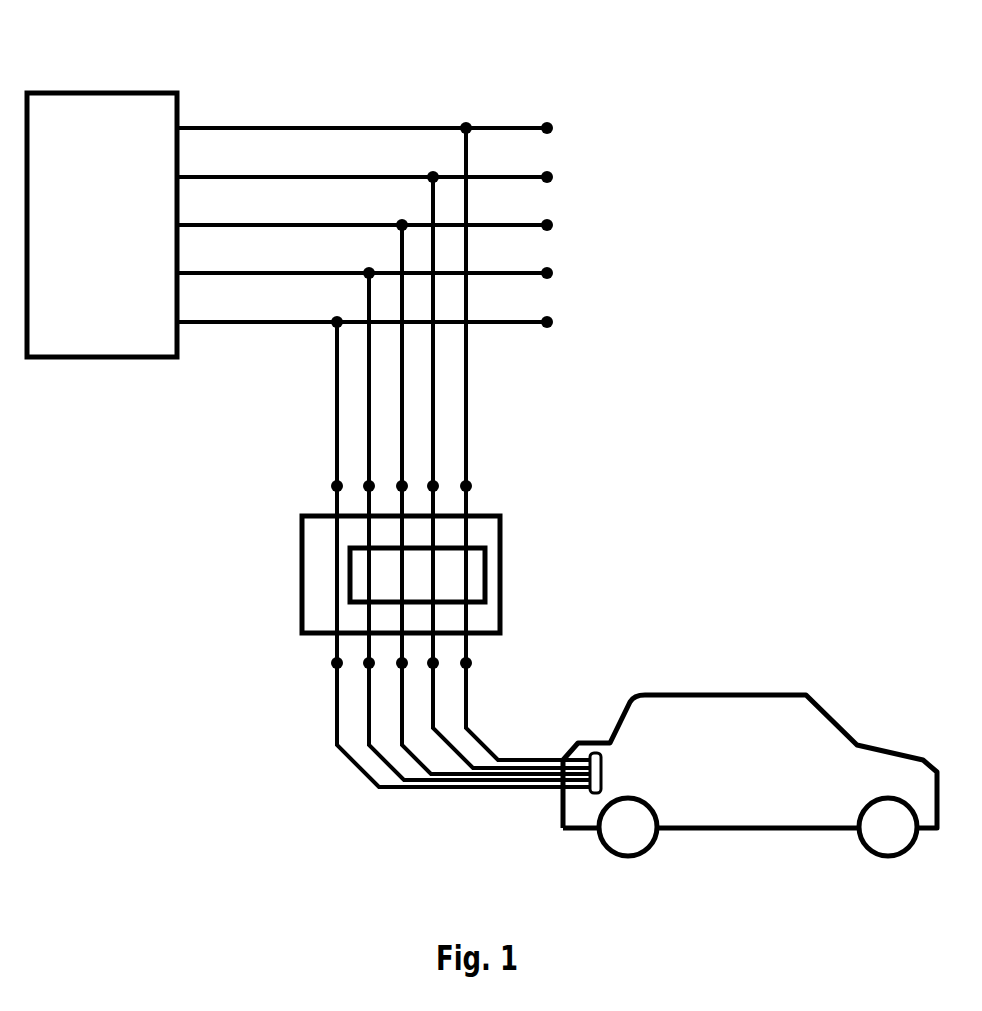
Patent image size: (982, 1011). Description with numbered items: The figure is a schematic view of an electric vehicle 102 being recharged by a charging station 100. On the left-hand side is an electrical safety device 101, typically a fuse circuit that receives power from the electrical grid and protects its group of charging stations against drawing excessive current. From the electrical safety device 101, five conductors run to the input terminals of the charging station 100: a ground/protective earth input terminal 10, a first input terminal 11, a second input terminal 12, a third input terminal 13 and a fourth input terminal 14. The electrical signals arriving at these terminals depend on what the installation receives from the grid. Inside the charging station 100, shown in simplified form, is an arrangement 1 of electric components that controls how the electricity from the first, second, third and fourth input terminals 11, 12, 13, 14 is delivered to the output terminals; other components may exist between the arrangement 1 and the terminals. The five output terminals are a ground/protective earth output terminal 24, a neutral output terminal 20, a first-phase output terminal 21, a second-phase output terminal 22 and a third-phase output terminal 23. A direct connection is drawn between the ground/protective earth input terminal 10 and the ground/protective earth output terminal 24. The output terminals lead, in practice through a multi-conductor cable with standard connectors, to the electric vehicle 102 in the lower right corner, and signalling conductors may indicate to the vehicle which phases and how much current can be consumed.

The electrical safety device 101 is at (155, 93).
The charging station 100 is at (302, 563).
The arrangement of electric components 1 is at (485, 563).
The ground/protective earth input terminal 10 is at (337, 486).
The first input terminal 11 is at (369, 486).
The second input terminal 12 is at (402, 486).
The third input terminal 13 is at (433, 486).
The fourth input terminal 14 is at (466, 486).
The neutral output terminal 20 is at (369, 663).
The first-phase output terminal 21 is at (402, 663).
The second-phase output terminal 22 is at (433, 663).
The third-phase output terminal 23 is at (466, 663).
The ground/protective earth output terminal 24 is at (337, 663).
The electric vehicle 102 is at (720, 695).